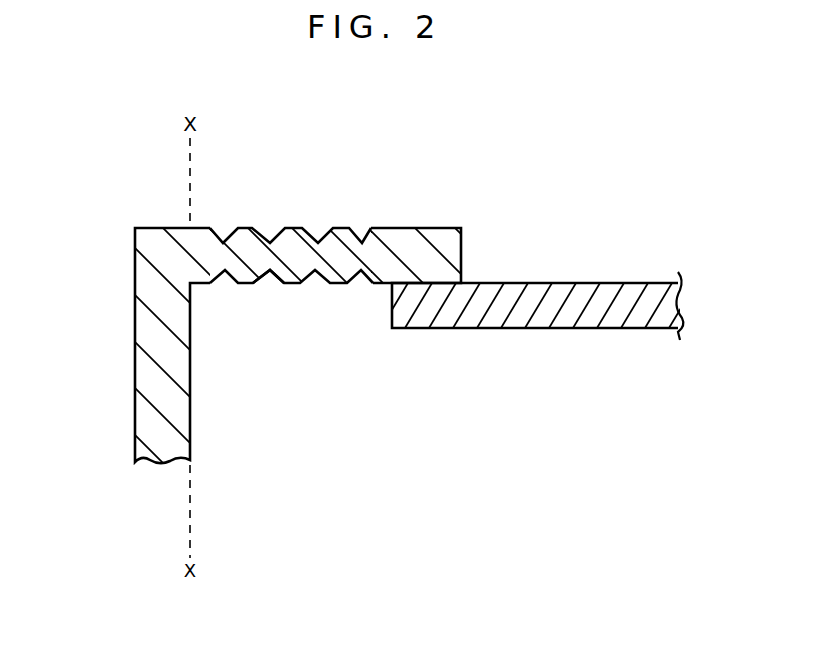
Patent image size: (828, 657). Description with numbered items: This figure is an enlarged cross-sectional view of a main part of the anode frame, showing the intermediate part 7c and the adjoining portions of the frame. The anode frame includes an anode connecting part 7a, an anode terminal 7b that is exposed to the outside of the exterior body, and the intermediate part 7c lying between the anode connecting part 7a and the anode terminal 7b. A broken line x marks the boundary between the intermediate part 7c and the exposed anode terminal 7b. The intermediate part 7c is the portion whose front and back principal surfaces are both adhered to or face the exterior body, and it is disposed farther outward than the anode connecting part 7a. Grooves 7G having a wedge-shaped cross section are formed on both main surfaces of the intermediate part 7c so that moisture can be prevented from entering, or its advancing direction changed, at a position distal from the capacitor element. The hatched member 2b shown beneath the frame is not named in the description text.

The anode connecting part 7a is at (413, 258).
The anode terminal 7b is at (160, 303).
The intermediate part 7c is at (297, 253).
The grooves 7G is at (267, 288).
The housing wall 2b is at (605, 300).